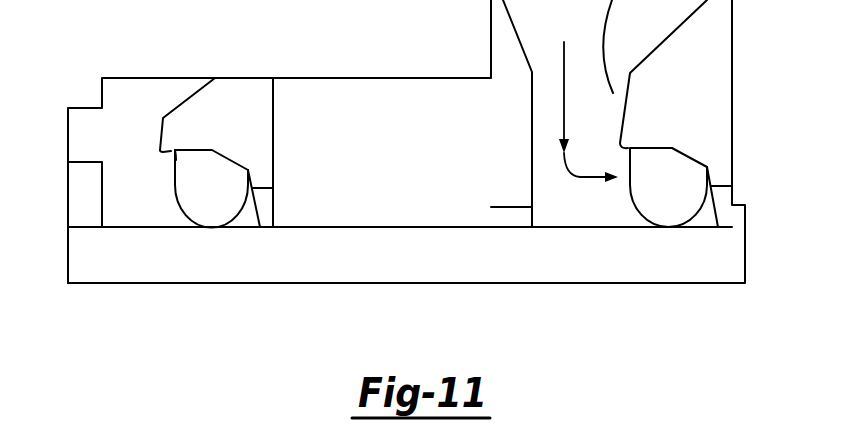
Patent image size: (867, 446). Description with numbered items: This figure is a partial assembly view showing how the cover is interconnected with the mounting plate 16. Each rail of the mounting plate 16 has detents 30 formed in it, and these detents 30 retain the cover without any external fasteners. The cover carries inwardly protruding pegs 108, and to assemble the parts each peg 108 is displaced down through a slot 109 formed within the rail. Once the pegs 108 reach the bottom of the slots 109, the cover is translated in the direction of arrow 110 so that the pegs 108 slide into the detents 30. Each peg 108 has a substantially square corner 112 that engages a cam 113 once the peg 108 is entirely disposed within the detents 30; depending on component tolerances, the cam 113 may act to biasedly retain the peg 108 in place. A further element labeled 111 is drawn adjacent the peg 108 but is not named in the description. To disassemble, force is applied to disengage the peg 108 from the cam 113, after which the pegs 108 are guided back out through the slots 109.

The mounting plate 16 is at (178, 50).
The detents 30 is at (252, 213).
The pegs 108 is at (225, 200).
The slot 109 is at (152, 118).
The arrow 110 is at (573, 178).
The wedge member 111 is at (226, 156).
The square corner 112 is at (175, 153).
The cam 113 is at (165, 152).